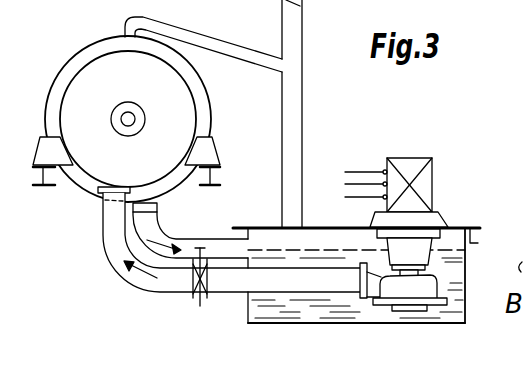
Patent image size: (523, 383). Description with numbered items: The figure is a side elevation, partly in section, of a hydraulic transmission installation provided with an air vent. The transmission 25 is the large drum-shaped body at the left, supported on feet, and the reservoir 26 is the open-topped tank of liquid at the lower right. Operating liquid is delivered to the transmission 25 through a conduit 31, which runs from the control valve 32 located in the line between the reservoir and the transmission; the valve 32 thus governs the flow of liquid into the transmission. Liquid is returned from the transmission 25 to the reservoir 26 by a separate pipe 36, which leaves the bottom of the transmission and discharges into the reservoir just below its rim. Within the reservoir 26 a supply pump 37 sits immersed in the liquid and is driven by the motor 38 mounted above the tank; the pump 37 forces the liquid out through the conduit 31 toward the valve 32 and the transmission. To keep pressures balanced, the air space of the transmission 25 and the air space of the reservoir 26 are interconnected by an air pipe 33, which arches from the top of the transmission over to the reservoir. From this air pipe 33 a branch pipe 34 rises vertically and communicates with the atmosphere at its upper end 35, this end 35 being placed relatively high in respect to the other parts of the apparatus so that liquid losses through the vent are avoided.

The transmission 25 is at (126, 119).
The reservoir 26 is at (443, 313).
The conduit 31 is at (118, 253).
The control valve 32 is at (211, 297).
The air pipe 33 is at (207, 43).
The branch pipe 34 is at (293, 53).
The upper end 35 is at (288, 0).
The pipe 36 is at (147, 228).
The supply pump 37 is at (420, 287).
The motor 38 is at (425, 183).